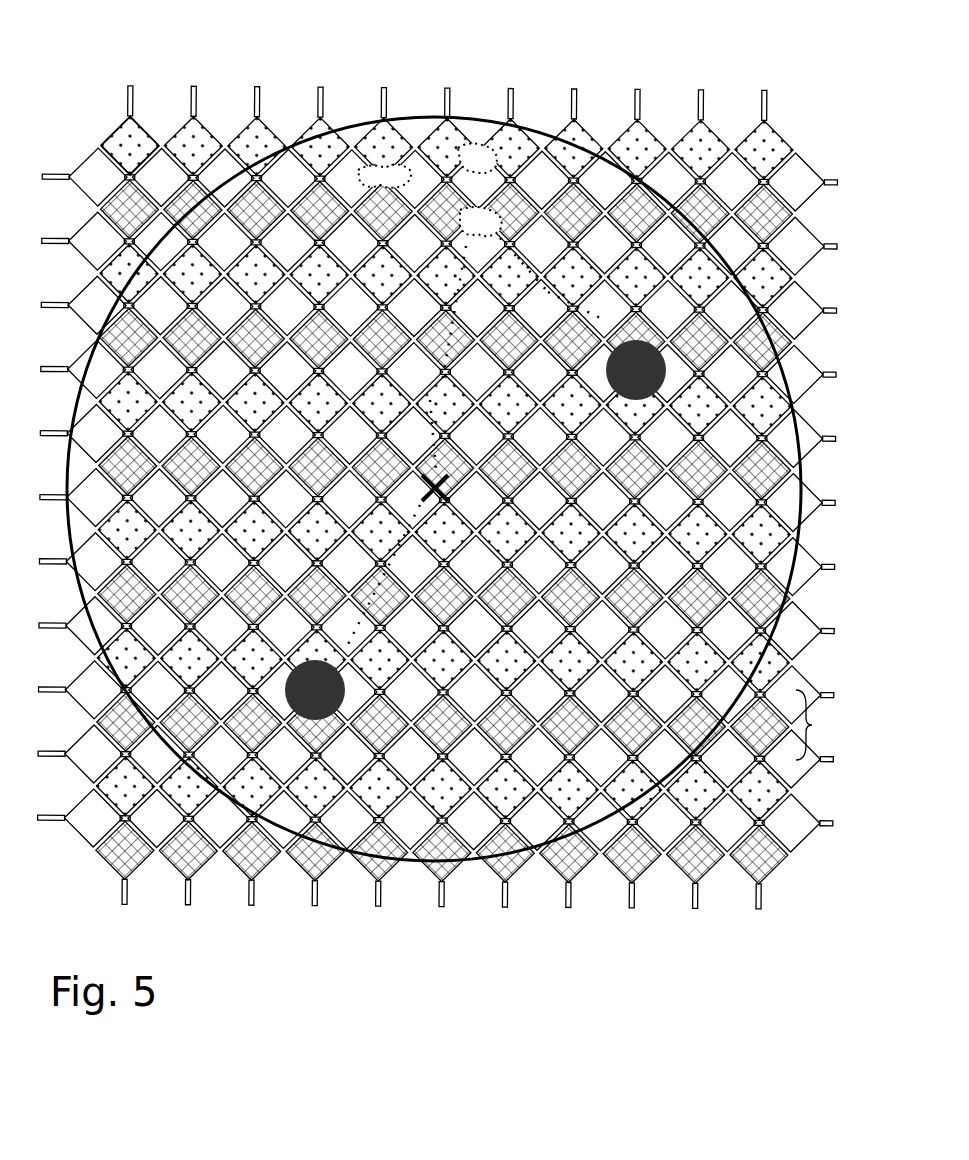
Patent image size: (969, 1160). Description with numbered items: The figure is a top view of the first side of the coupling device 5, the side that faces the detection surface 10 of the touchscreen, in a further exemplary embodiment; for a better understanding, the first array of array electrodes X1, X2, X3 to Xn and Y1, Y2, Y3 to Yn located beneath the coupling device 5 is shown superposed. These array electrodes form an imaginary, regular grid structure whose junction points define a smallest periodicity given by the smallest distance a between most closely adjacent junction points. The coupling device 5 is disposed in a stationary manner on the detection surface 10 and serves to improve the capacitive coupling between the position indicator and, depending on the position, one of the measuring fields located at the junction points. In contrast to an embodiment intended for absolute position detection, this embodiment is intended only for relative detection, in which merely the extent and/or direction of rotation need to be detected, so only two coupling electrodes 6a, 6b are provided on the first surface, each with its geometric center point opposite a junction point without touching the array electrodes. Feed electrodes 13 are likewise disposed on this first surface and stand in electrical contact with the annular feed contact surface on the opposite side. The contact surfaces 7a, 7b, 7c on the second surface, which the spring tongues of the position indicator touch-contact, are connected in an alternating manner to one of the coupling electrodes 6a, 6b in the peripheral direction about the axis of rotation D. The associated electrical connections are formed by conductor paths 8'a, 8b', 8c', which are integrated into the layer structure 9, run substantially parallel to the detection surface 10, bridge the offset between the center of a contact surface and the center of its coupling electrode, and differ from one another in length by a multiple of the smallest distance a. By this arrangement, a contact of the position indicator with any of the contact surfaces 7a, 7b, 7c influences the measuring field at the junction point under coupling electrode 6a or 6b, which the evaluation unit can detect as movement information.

The coupling device 5 is at (452, 463).
The feed electrode 13 is at (134, 163).
The detection surface 10 is at (752, 798).
The smallest distance between most closely adjacent junction points a is at (813, 725).
The contact surface 7a is at (384, 172).
The contact surface 7b is at (492, 212).
The contact surface 7c is at (479, 150).
The conductor path 8b' is at (566, 176).
The conductor path 8c' is at (623, 197).
The conductor path 8'a is at (446, 358).
The axis of rotation D is at (396, 562).
The layer structure 9 is at (602, 838).
The coupling electrode 6a is at (346, 690).
The coupling electrode 6b is at (667, 370).
The array electrode X1 is at (128, 478).
The array electrode X2 is at (191, 478).
The array electrode X3 is at (254, 479).
The array electrode Xn is at (762, 482).
The array electrode Y1 is at (454, 180).
The array electrode Y2 is at (454, 244).
The array electrode Y3 is at (453, 308).
The array electrode Yn is at (449, 821).